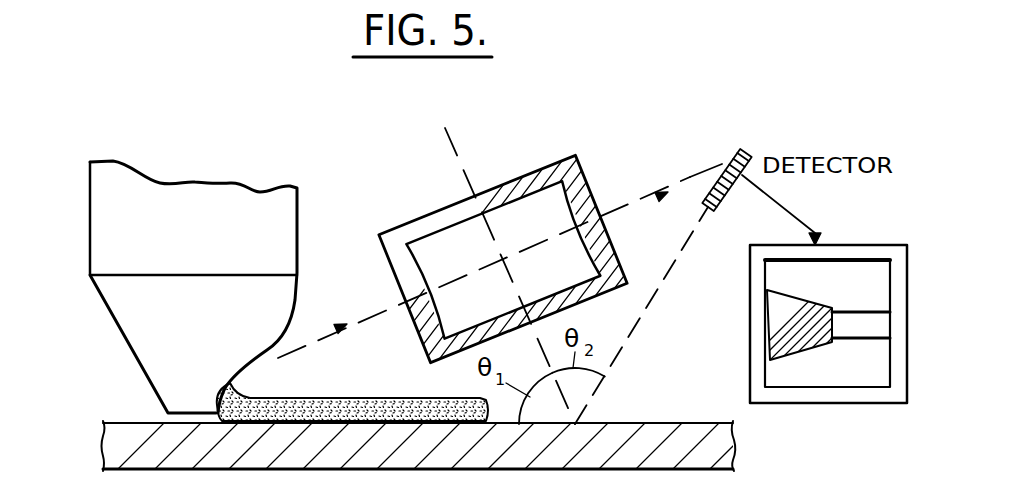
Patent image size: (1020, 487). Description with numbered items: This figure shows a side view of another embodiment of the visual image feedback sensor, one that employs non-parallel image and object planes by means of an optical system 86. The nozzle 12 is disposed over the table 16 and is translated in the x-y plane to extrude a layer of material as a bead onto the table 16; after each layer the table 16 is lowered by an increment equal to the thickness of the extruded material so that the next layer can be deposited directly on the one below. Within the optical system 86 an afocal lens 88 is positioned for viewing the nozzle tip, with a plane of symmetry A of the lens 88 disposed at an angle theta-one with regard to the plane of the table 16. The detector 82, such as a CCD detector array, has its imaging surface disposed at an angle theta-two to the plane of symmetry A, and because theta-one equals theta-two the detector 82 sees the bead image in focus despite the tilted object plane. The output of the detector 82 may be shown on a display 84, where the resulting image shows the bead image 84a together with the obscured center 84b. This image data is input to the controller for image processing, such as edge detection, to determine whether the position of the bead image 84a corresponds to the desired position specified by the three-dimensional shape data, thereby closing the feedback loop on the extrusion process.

The nozzle 12 is at (107, 308).
The table 16 is at (100, 440).
The optical system 86 is at (412, 206).
The afocal lens 88 is at (558, 157).
The detector 82 is at (745, 152).
The display 84 is at (865, 243).
The bead image 84a is at (863, 340).
The obscured center 84b is at (783, 330).
The plane of symmetry A is at (460, 145).